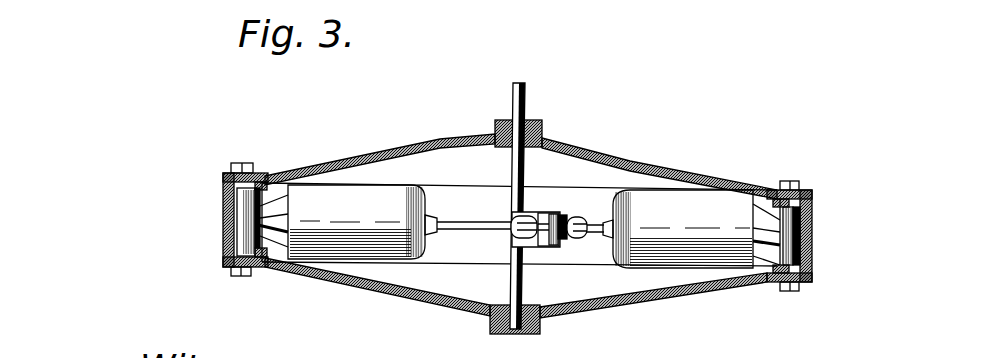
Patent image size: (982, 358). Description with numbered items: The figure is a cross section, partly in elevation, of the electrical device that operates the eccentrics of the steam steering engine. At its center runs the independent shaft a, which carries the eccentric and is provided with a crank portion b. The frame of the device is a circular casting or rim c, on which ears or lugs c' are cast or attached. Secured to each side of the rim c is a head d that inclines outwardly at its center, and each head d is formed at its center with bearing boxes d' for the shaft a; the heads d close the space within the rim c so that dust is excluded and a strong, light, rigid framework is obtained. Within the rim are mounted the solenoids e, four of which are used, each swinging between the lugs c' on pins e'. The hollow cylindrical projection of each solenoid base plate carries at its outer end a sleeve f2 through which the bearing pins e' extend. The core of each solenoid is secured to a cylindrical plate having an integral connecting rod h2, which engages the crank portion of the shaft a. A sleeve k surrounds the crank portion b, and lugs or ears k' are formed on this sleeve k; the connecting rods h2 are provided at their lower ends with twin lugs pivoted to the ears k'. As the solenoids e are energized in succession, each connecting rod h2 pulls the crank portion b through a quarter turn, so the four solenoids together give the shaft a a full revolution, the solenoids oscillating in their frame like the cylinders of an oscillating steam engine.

The independent shaft a is at (527, 168).
The crank portion b is at (542, 248).
The circular casting or rim c is at (534, 227).
The ears or lugs c' is at (521, 202).
The head d is at (521, 229).
The bearing boxes d' is at (530, 219).
The solenoids e is at (520, 226).
The pins e' is at (493, 229).
The sleeve f2 is at (835, 215).
The connecting rod h2 is at (468, 226).
The sleeve k is at (575, 216).
The lugs or ears k' is at (586, 257).